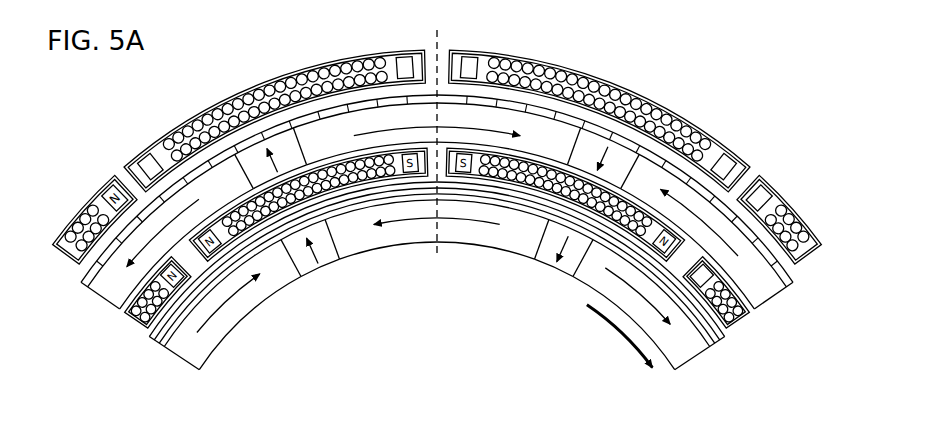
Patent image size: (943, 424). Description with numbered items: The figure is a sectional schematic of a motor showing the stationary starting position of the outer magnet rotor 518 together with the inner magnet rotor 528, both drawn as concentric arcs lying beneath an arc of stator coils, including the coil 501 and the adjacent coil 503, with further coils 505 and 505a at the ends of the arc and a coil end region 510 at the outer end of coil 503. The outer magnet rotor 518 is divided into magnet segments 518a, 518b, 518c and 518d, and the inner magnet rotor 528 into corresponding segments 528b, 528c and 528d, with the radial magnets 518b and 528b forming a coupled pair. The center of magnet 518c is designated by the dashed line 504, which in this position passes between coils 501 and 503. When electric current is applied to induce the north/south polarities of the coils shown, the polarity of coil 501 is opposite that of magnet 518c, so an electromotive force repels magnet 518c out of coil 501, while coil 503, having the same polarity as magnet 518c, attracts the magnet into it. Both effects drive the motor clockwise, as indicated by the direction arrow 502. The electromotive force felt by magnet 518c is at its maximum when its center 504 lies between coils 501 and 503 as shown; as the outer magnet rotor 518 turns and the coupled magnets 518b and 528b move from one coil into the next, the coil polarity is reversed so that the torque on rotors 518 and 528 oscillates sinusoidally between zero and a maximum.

The coil 501 is at (303, 77).
The direction arrow 502 is at (614, 332).
The coil 503 is at (575, 55).
The dashed line 504 is at (437, 250).
The coil 505 is at (723, 173).
The coil 505a is at (683, 255).
The stator pole 510 is at (703, 130).
The outer magnet rotor 518 is at (102, 305).
The first magnet segment 518a is at (150, 200).
The radial magnet 518b is at (258, 154).
The magnet 518c is at (382, 117).
The fourth magnet segment 518d is at (615, 150).
The magnet rotor 528 is at (173, 363).
The radial magnet 528b is at (300, 274).
The magnet segment 528c is at (396, 238).
The magnet segment 528d is at (570, 265).